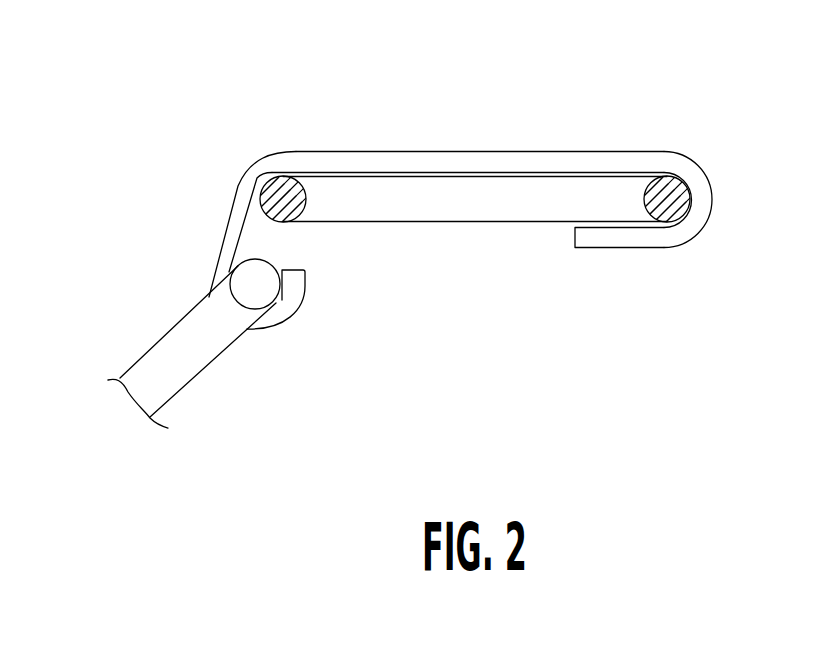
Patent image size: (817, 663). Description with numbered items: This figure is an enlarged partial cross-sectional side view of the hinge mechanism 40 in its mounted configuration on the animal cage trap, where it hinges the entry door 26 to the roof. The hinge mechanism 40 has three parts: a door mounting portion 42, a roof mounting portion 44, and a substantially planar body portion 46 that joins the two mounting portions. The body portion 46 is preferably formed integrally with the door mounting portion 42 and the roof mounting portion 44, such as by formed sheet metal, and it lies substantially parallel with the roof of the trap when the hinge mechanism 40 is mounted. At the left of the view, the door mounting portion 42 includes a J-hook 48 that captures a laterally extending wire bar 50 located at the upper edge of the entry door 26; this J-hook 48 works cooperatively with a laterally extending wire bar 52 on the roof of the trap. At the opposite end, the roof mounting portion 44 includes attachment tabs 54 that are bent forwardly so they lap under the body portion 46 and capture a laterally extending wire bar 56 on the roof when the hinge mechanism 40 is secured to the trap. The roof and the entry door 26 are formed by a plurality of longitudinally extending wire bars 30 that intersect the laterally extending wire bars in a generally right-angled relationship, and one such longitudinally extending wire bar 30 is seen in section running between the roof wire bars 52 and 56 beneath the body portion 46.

The entry door 26 is at (168, 370).
The longitudinally extending wire bars 30 is at (502, 202).
The hinge mechanism 40 is at (421, 180).
The door mounting portion 42 is at (186, 257).
The roof mounting portion 44 is at (708, 251).
The body portion 46 is at (415, 141).
The J-hook 48 is at (263, 320).
The laterally extending wire bar 50 is at (260, 278).
The laterally extending wire bar 52 is at (281, 198).
The attachment tabs 54 is at (628, 240).
The laterally extending wire bar 56 is at (662, 183).